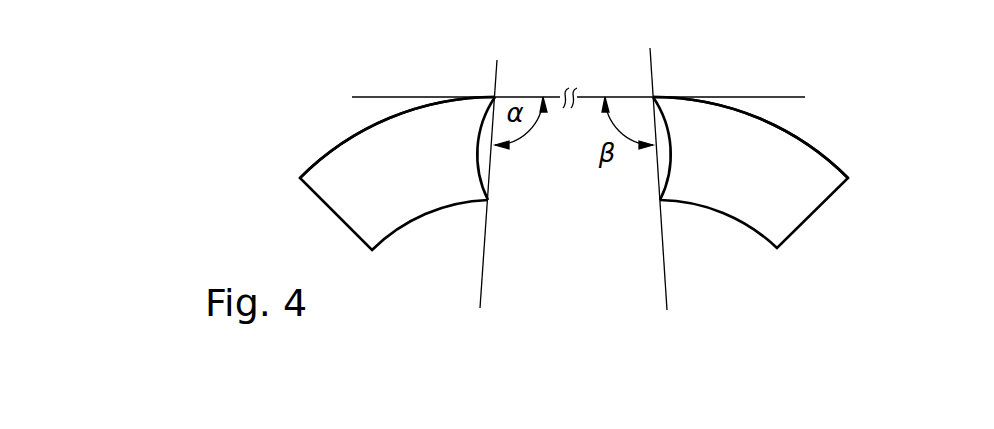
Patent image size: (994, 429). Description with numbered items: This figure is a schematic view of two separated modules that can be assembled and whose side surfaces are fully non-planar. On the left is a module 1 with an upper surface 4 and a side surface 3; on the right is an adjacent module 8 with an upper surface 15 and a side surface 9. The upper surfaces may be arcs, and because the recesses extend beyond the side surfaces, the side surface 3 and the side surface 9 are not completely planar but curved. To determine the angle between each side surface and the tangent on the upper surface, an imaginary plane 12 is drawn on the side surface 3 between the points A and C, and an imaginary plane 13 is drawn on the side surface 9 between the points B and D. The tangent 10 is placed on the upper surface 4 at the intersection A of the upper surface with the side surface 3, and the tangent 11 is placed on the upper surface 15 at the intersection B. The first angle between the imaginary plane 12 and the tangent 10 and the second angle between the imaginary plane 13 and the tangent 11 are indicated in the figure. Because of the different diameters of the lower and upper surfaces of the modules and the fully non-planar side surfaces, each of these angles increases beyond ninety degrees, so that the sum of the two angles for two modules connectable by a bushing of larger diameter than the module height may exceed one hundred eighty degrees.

The module 1 is at (338, 178).
The side surface 3 is at (475, 143).
The upper surface 4 is at (338, 147).
The adjacent module 8 is at (807, 175).
The side surface 9 is at (672, 152).
The tangent 10 is at (372, 96).
The tangent 11 is at (773, 97).
The imaginary plane 12 is at (485, 255).
The imaginary plane 13 is at (665, 272).
The upper surface 15 is at (787, 128).
The intersection point A is at (495, 97).
The intersection point B is at (653, 97).
The point C is at (488, 200).
The point D is at (660, 200).